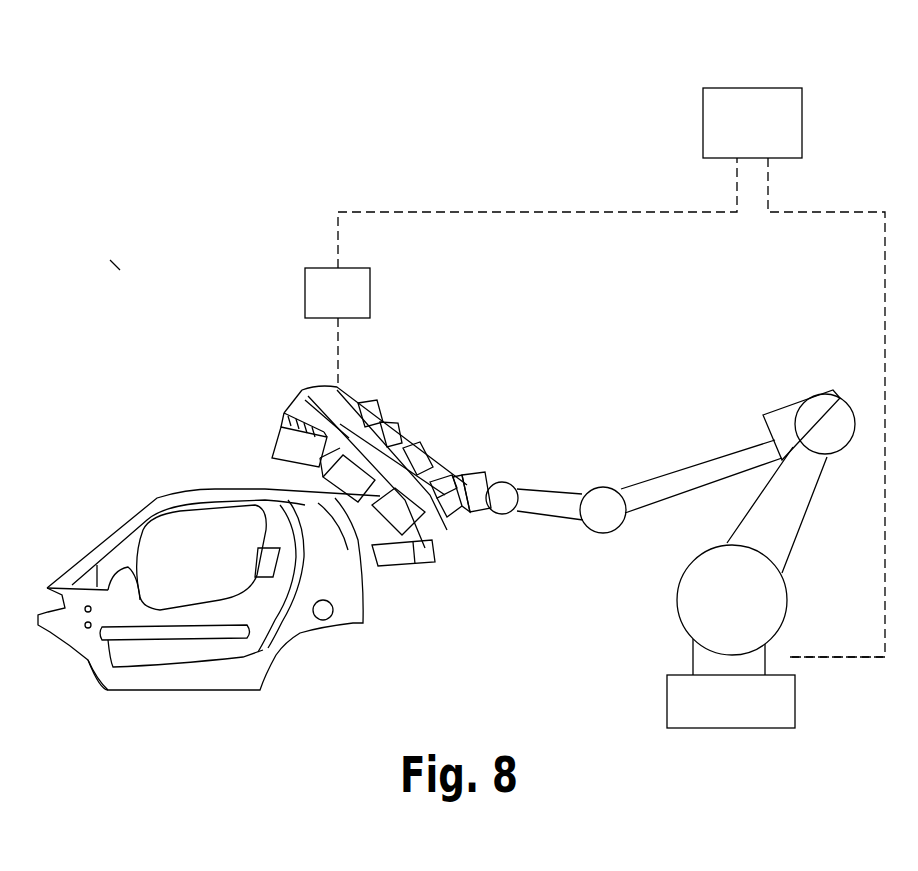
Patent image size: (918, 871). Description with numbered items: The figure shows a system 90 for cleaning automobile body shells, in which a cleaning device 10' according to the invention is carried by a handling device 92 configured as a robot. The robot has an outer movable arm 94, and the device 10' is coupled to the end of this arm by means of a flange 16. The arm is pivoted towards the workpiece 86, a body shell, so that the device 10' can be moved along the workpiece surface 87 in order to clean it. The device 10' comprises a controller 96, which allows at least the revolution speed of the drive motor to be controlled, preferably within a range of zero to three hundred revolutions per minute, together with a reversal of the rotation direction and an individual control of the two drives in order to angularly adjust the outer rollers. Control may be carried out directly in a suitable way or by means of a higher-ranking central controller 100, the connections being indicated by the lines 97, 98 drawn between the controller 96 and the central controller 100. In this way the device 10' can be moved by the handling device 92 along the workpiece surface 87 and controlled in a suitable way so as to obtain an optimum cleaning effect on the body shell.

The system 90 is at (118, 272).
The line 97 is at (533, 210).
The higher-ranking central controller 100 is at (750, 87).
The controller 96 is at (305, 293).
The handling device 92 is at (768, 350).
The outer movable arm 94 is at (480, 481).
The flange 16 is at (462, 476).
The device 10' is at (375, 434).
The workpiece 86 is at (120, 533).
The workpiece surface 87 is at (318, 503).
The line 98 is at (858, 660).